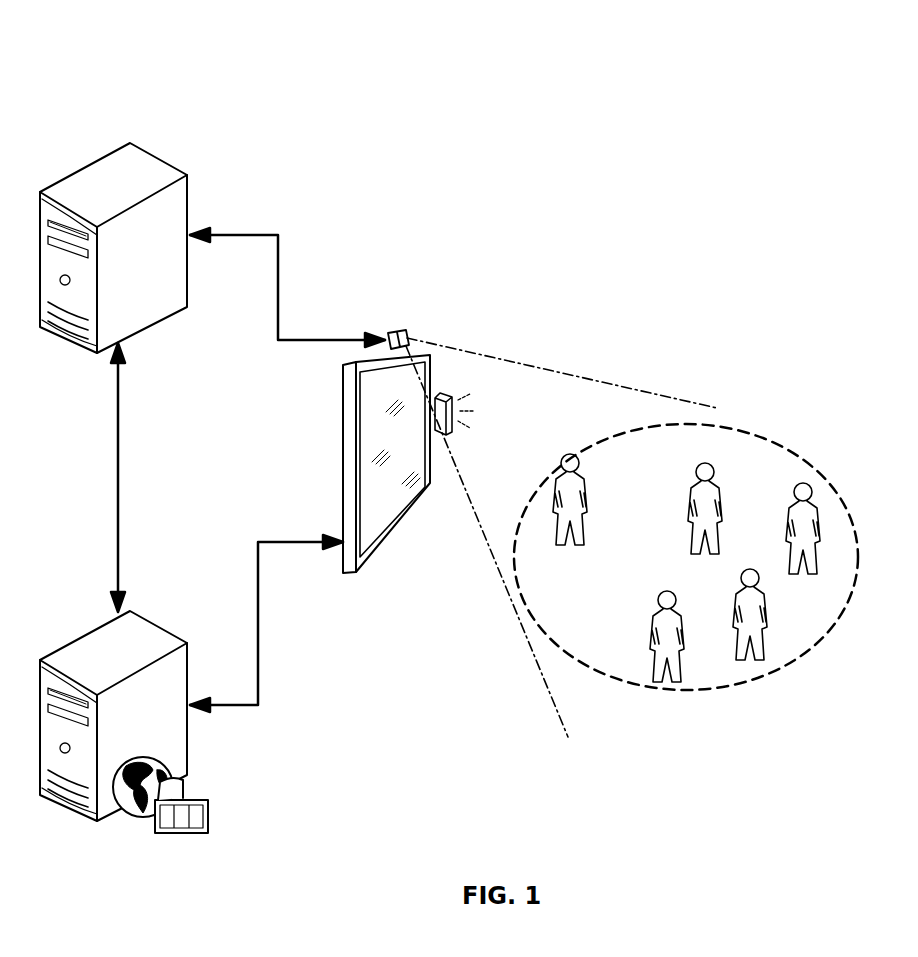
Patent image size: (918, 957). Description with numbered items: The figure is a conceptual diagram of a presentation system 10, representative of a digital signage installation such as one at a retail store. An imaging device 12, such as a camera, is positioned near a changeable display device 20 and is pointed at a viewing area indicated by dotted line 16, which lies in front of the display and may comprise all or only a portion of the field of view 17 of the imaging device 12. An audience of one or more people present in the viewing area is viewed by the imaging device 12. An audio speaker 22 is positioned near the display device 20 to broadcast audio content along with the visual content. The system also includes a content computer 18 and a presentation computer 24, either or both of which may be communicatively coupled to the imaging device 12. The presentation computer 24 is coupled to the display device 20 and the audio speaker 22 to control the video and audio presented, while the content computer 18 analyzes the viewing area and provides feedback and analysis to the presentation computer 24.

The presentation system 10 is at (110, 48).
The imaging device 12 is at (388, 334).
The dotted line 16 is at (800, 657).
The field of view 17 is at (563, 372).
The content computer 18 is at (78, 174).
The display device 20 is at (372, 447).
The audio speaker 22 is at (450, 408).
The presentation computer 24 is at (78, 642).